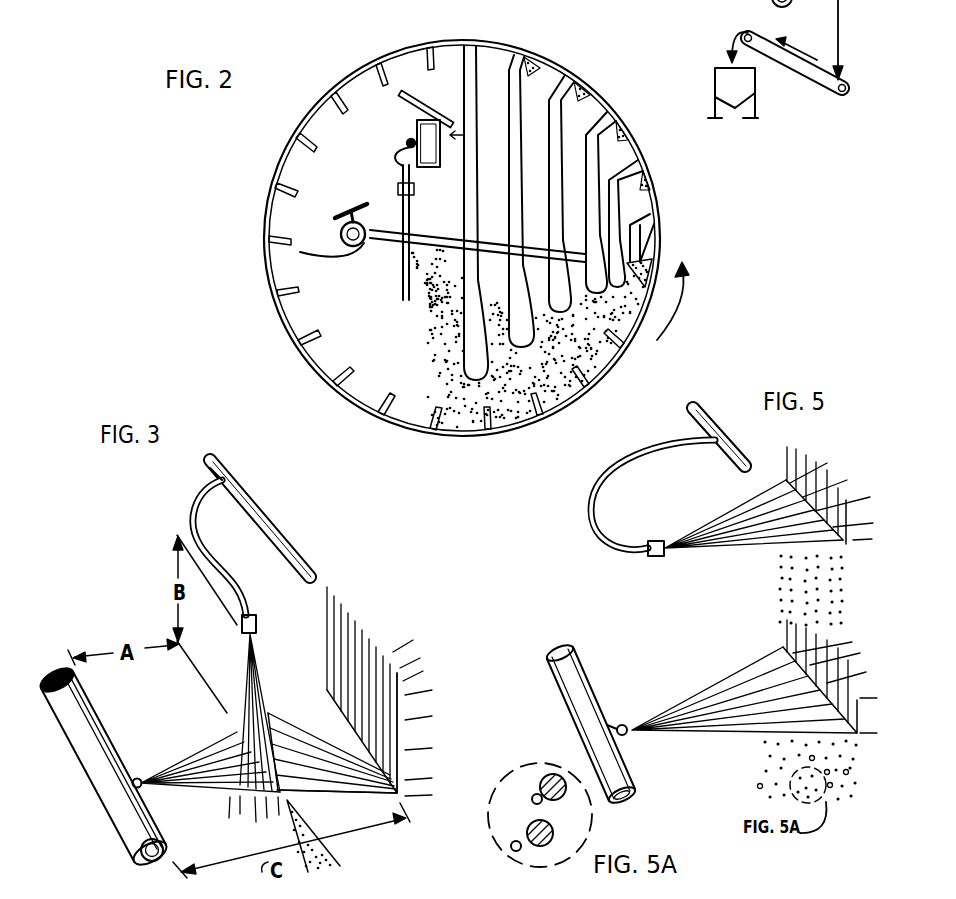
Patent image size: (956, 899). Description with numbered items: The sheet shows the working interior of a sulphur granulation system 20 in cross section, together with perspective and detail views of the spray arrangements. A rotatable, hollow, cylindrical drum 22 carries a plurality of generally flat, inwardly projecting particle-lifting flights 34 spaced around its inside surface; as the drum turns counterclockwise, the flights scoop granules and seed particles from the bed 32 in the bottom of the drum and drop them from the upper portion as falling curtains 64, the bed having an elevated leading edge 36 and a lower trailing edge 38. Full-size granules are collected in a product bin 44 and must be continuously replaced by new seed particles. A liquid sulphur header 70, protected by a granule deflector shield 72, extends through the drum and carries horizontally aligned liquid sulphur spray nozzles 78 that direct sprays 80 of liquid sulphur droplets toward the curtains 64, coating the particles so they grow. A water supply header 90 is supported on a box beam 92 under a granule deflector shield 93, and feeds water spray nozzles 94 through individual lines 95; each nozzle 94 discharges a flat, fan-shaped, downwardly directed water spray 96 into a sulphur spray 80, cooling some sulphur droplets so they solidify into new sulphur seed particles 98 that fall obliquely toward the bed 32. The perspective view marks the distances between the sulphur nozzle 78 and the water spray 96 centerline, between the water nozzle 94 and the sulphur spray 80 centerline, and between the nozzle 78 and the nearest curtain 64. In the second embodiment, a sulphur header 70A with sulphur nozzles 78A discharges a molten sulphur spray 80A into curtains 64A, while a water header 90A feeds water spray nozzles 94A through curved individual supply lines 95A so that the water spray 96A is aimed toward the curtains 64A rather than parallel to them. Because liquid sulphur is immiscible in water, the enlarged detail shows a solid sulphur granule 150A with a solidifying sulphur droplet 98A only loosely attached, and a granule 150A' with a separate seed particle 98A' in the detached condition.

In FIG. 2, the sulphur granulation system 20 is at (312, 61).
In FIG. 2, the drum 22 is at (550, 60).
In FIG. 2, the bed 32 is at (567, 300).
In FIG. 2, the particle-lifting flights 34 is at (607, 134).
In FIG. 2, the leading edge 36 is at (640, 240).
In FIG. 2, the trailing edge 38 is at (397, 427).
In FIG. 2, the product bin 44 is at (711, 88).
In FIG. 2, the curtains 64 is at (510, 120).
In FIG. 2, the liquid sulphur header 70 is at (333, 206).
In FIG. 3, the liquid sulphur header 70 is at (109, 829).
In FIG. 2, the granule deflector shield 72 is at (338, 207).
In FIG. 2, the liquid sulphur spray nozzles 78 is at (300, 252).
In FIG. 3, the liquid sulphur spray nozzles 78 is at (140, 778).
In FIG. 2, the sprays 80 is at (468, 58).
In FIG. 3, the sprays 80 is at (197, 777).
In FIG. 2, the water supply header 90 is at (407, 141).
In FIG. 3, the water supply header 90 is at (255, 502).
In FIG. 2, the box beam 92 is at (450, 40).
In FIG. 2, the granule deflector shield 93 is at (411, 90).
In FIG. 2, the water spray nozzles 94 is at (398, 190).
In FIG. 3, the water spray nozzles 94 is at (257, 620).
In FIG. 2, the individual lines 95 is at (402, 162).
In FIG. 3, the individual lines 95 is at (200, 493).
In FIG. 2, the water spray 96 is at (437, 273).
In FIG. 3, the water spray 96 is at (243, 665).
In FIG. 2, the sulphur seed particles 98 is at (422, 243).
In FIG. 3, the sulphur seed particles 98 is at (323, 857).
In FIG. 5, the water header 90A is at (711, 412).
In FIG. 5, the water spray nozzles 94A is at (651, 557).
In FIG. 5, the individual supply lines 95A is at (607, 487).
In FIG. 5, the water spray 96A is at (747, 503).
In FIG. 5, the curtains 64A is at (786, 582).
In FIG. 5, the sulphur header 70A is at (548, 658).
In FIG. 5, the sulphur nozzles 78A is at (623, 722).
In FIG. 5, the sulphur spray 80A is at (716, 690).
In FIG. 5A, the sulphur droplet 98A is at (516, 762).
In FIG. 5A, the seed particle 98A' is at (490, 806).
In FIG. 5A, the solid sulphur granule 150A is at (579, 794).
In FIG. 5A, the granule 150A' is at (519, 780).